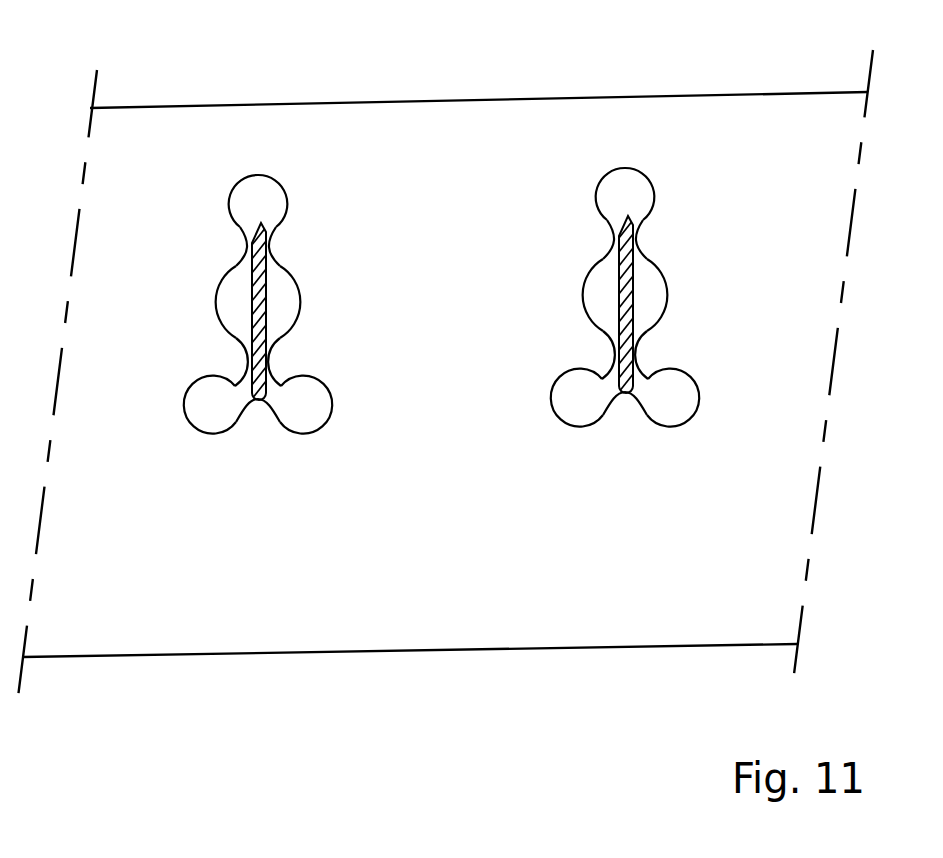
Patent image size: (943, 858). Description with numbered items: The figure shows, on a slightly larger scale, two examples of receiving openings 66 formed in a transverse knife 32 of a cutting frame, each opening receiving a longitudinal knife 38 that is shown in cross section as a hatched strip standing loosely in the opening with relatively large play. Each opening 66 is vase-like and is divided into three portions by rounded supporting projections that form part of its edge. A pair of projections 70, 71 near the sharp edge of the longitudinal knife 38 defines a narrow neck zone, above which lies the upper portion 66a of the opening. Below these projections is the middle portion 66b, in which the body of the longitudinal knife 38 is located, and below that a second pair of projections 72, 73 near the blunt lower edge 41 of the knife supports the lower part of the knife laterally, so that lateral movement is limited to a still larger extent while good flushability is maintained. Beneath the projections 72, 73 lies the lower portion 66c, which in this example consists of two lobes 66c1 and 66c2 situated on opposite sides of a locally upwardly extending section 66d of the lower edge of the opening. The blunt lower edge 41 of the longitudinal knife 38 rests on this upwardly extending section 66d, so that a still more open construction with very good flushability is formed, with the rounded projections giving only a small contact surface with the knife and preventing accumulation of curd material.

The transverse knife 32 is at (462, 603).
The longitudinal knife 38 is at (252, 297).
The blunt edge 41 is at (260, 391).
The opening 66 is at (446, 272).
The upper portion 66a is at (262, 192).
The middle portion 66b is at (282, 307).
The lower portion 66c is at (446, 449).
The lobe 66c1 is at (534, 429).
The lobe 66c2 is at (352, 432).
The locally upwardly extending section 66d is at (258, 416).
The projection 70 is at (238, 249).
The projection 71 is at (281, 248).
The projection 72 is at (239, 365).
The projection 73 is at (283, 364).